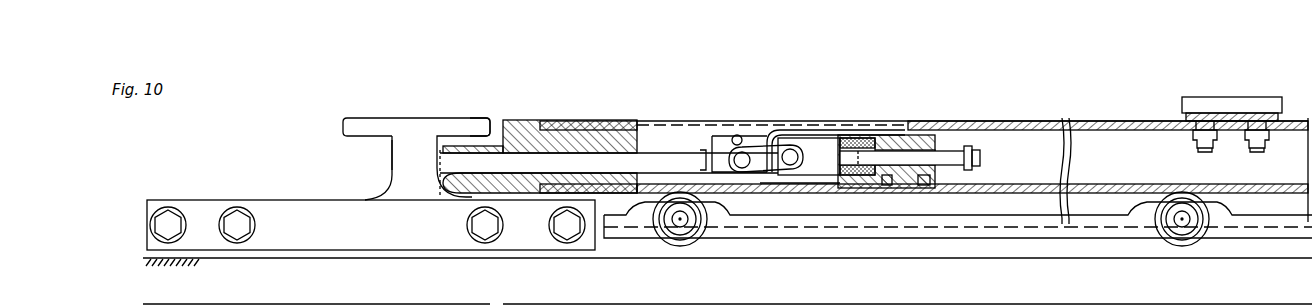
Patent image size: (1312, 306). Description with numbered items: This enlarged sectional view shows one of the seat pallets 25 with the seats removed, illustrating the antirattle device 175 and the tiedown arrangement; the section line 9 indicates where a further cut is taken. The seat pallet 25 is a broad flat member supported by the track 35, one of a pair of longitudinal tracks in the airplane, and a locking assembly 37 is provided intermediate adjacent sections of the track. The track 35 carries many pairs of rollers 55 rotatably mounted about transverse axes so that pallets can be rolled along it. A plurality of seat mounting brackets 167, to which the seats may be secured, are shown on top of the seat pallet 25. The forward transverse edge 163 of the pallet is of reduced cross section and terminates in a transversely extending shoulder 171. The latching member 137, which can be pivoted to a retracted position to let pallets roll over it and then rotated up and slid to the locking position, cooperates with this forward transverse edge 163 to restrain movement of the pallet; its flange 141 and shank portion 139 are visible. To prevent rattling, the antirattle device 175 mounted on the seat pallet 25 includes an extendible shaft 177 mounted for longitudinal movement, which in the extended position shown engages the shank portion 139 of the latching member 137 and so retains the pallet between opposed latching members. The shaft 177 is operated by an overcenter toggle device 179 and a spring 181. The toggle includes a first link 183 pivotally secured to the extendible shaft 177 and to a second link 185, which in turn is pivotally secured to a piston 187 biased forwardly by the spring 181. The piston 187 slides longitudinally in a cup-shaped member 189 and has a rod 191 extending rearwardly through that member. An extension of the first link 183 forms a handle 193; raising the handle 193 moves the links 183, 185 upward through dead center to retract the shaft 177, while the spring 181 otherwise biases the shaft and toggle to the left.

The section line 9- 9 is at (146, 200).
The seat pallet 25 is at (994, 118).
The track 35 is at (857, 240).
The locking assembly 37 is at (268, 196).
The roller 55 is at (678, 243).
The latching member 137 is at (405, 117).
The shank portion 139 is at (412, 158).
The bracket flange 141 is at (463, 127).
The forward transverse edge 163 is at (439, 198).
The seat mounting bracket 167 is at (1238, 97).
The shoulder 171 is at (503, 135).
The antirattle device 175 is at (788, 117).
The extendible shaft 177 is at (648, 160).
The overcenter toggle device 179 is at (752, 138).
The spring 181 is at (866, 145).
The first link 183 is at (718, 170).
The second link 185 is at (770, 166).
The piston 187 is at (818, 150).
The cup-shaped member 189 is at (912, 138).
The rod 191 is at (981, 158).
The handle 193 is at (858, 140).